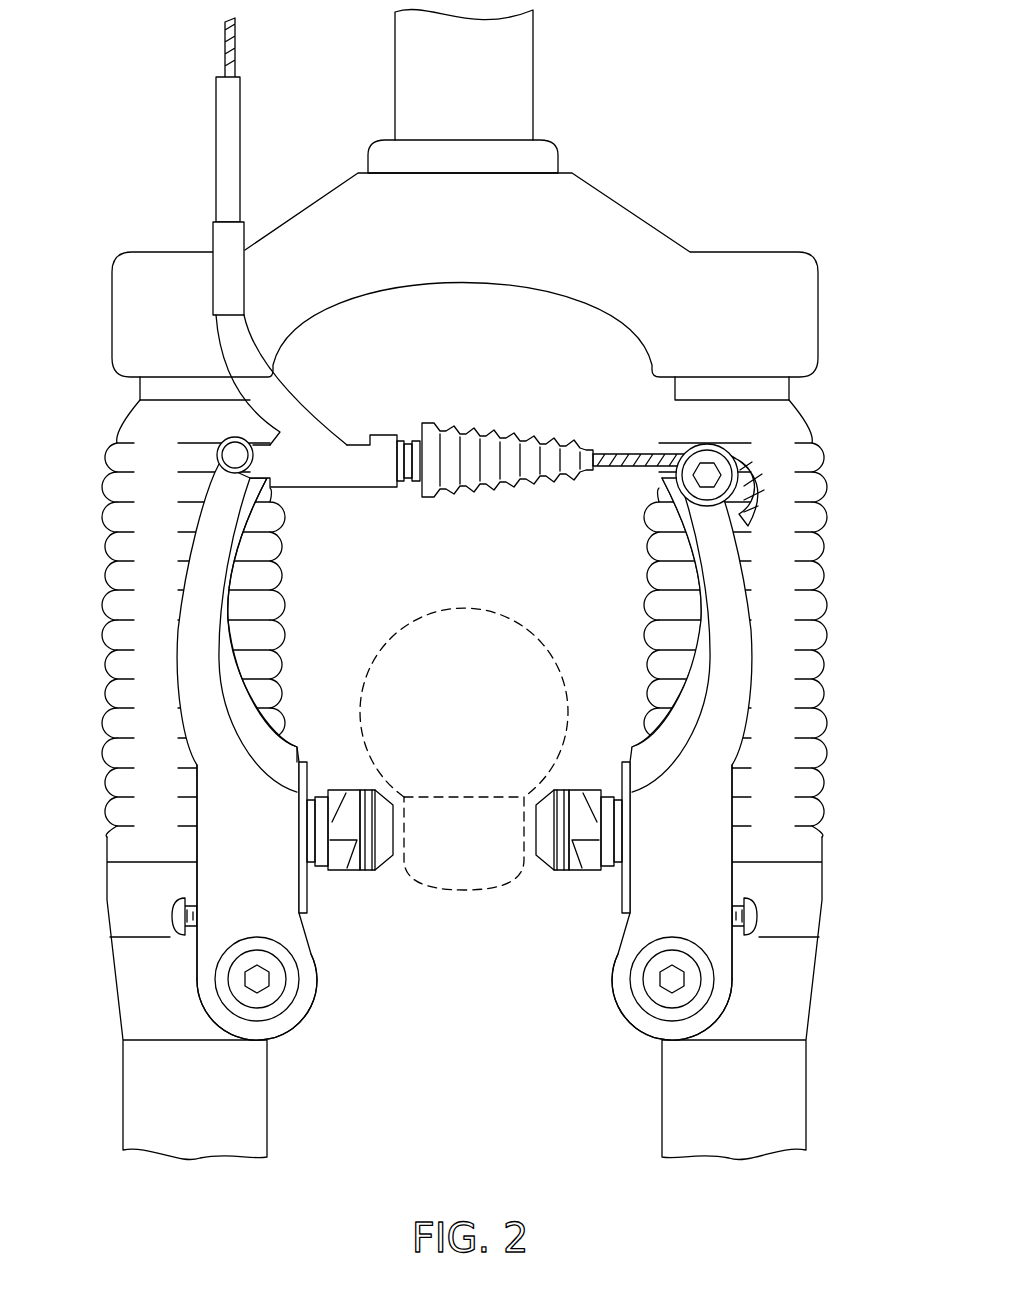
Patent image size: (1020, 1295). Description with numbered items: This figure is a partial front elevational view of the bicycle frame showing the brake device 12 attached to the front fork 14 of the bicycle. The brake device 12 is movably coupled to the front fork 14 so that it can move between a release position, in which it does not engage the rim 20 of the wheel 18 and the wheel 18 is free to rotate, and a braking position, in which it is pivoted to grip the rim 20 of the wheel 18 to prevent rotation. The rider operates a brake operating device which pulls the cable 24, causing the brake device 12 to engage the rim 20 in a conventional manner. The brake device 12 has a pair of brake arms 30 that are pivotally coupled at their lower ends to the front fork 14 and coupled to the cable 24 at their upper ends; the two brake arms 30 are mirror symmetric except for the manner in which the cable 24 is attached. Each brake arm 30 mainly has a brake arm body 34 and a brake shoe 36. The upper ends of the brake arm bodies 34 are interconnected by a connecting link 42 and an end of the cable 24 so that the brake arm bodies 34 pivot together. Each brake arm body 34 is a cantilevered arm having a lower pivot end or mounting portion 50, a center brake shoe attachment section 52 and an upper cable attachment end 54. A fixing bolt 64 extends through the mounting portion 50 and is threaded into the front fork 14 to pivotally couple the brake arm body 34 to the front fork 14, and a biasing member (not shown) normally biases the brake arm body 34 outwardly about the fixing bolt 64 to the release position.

The brake device 12 is at (587, 414).
The front fork 14 is at (822, 970).
The wheel 18 is at (538, 633).
The rim 20 is at (437, 882).
The cable 24 is at (216, 136).
The brake arms 30 is at (471, 752).
The brake arm body 34 is at (262, 908).
The brake shoe 36 is at (338, 791).
The connecting link 42 is at (330, 468).
The mounting portion 50 is at (200, 1005).
The center brake shoe attachment section 52 is at (250, 858).
The upper cable attachment end 54 is at (218, 488).
The fixing bolt 64 is at (270, 990).